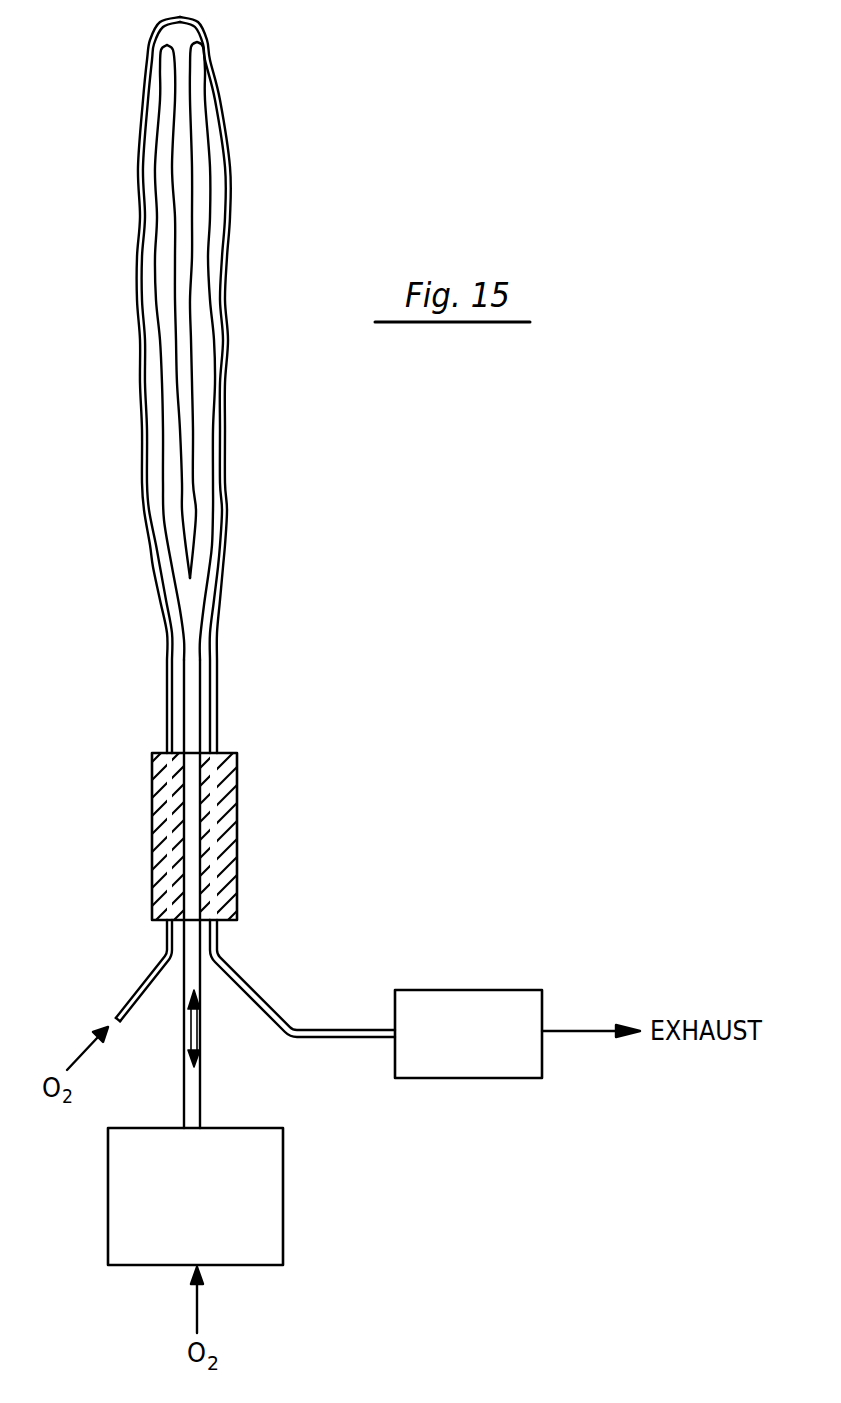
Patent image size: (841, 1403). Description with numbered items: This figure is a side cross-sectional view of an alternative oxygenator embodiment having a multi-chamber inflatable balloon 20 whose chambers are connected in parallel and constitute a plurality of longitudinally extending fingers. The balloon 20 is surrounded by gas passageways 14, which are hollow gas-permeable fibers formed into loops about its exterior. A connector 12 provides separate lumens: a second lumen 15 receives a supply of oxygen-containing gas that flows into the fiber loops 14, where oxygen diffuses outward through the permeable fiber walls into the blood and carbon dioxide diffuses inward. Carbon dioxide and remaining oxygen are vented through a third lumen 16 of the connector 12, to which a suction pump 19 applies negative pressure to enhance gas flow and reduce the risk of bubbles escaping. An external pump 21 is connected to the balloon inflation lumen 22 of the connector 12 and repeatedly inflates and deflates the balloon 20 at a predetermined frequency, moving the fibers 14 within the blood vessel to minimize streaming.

The connector 12 is at (152, 802).
The gas passageways 14 is at (147, 111).
The second lumen 15 is at (138, 987).
The third lumen 16 is at (256, 994).
The suction pump 19 is at (472, 990).
The inflatable balloon 20 is at (156, 223).
The external pump 21 is at (283, 1203).
The balloon inflation lumen 22 is at (200, 657).